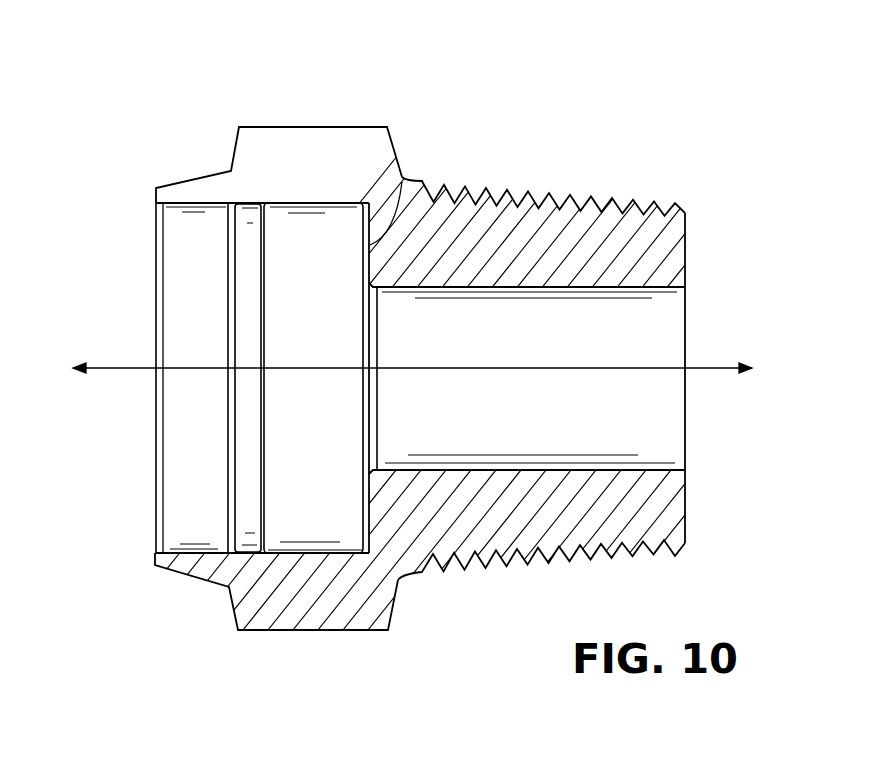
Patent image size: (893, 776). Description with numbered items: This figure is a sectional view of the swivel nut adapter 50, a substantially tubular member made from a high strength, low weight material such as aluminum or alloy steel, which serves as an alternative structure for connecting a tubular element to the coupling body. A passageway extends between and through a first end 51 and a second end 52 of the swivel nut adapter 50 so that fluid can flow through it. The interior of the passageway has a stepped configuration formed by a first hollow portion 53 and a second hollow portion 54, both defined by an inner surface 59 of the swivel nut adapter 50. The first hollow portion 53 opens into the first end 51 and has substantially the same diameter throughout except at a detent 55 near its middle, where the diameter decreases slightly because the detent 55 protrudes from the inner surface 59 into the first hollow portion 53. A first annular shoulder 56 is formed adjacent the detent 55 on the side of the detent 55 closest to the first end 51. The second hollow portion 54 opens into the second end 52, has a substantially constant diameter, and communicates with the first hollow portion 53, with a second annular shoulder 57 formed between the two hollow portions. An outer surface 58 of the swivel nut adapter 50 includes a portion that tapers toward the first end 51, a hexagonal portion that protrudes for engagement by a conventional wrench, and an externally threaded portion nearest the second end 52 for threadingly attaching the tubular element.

The swivel nut adapter 50 is at (698, 103).
The first end 51 is at (157, 437).
The second end 52 is at (687, 443).
The first hollow portion 53 is at (333, 203).
The second hollow portion 54 is at (537, 287).
The detent 55 is at (247, 203).
The first annular shoulder 56 is at (227, 240).
The second annular shoulder 57 is at (402, 182).
The outer surface 58 is at (657, 198).
The inner surface 59 is at (648, 288).